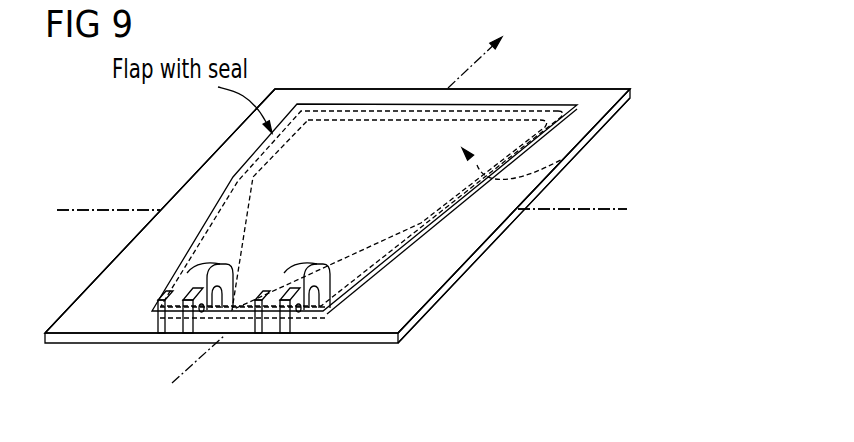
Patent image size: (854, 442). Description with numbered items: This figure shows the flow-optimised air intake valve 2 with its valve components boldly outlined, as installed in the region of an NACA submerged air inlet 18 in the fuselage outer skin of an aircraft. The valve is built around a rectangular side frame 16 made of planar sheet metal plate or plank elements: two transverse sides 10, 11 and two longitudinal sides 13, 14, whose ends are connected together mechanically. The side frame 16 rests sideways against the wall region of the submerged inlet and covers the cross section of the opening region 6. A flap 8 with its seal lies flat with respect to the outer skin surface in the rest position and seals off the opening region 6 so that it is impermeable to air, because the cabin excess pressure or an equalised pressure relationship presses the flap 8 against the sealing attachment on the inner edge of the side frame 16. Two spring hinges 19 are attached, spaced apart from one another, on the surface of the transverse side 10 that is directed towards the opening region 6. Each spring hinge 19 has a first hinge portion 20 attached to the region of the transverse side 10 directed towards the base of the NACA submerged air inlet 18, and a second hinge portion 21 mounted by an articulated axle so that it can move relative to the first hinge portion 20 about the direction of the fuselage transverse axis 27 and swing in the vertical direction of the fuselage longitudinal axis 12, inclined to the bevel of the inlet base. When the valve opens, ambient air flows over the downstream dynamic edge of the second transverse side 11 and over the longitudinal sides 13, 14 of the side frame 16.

The air intake valve 2 is at (664, 110).
The opening region 6 is at (342, 193).
The flap 8 is at (417, 132).
The transverse side 10 is at (138, 323).
The second transverse side 11 is at (372, 97).
The fuselage longitudinal axis 12 is at (478, 61).
The longitudinal side 13 is at (197, 181).
The longitudinal side 14 is at (487, 220).
The side frame 16 is at (161, 199).
The NACA submerged air inlet 18 is at (563, 159).
The spring hinge 19 is at (172, 337).
The first hinge portion 20 is at (203, 320).
The second hinge portion 21 is at (200, 273).
The fuselage transverse axis 27 is at (627, 211).